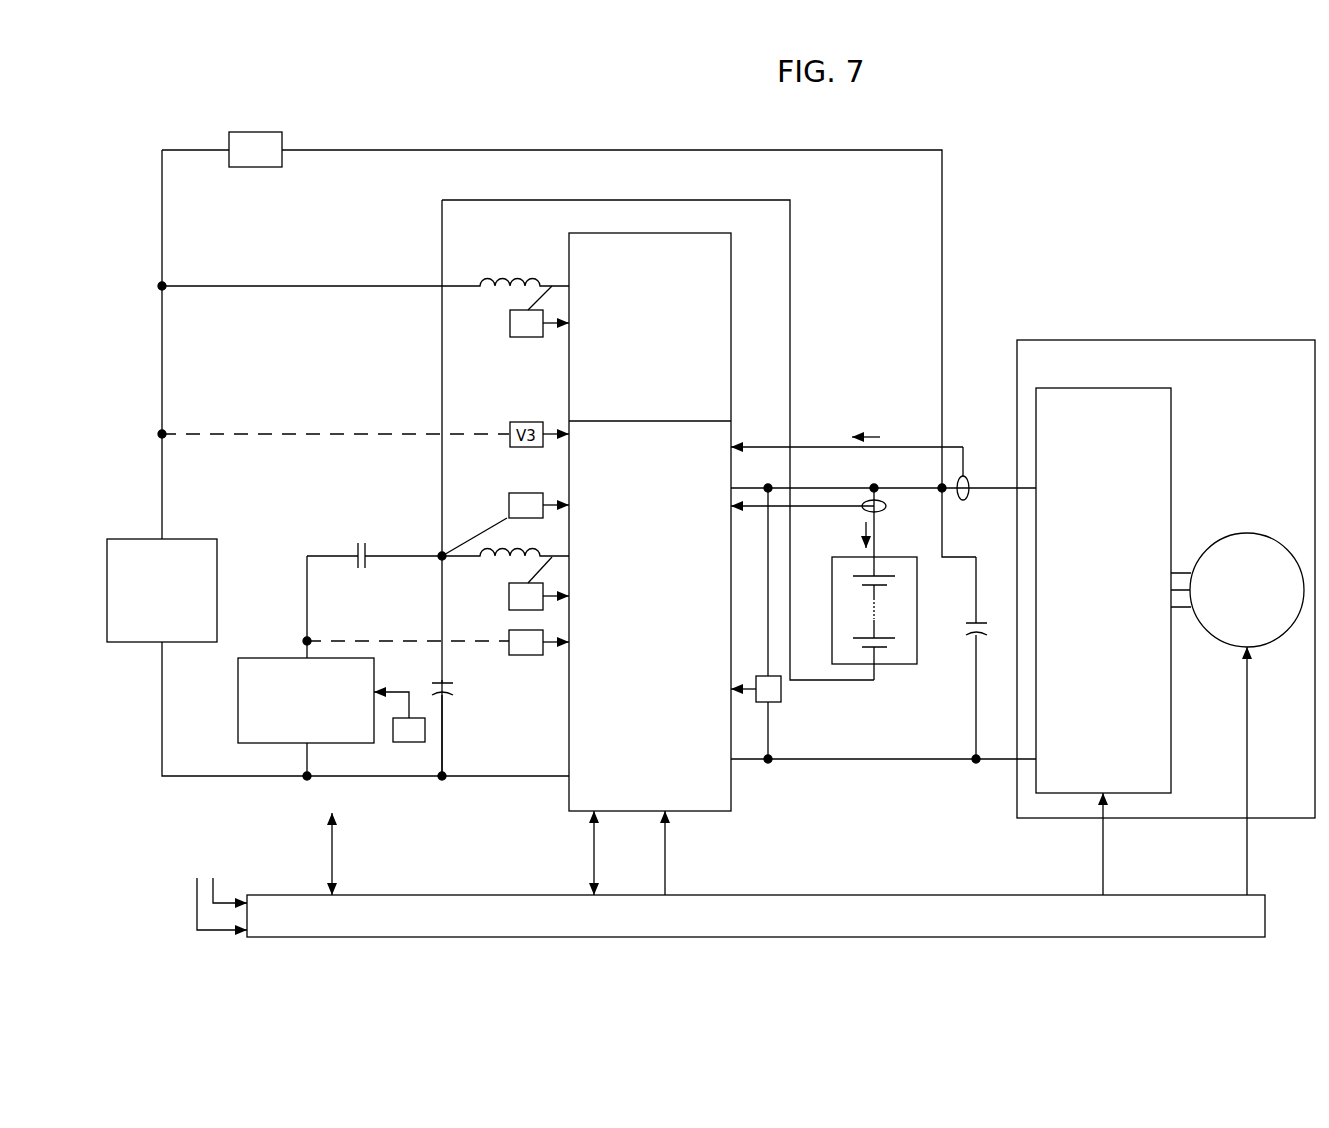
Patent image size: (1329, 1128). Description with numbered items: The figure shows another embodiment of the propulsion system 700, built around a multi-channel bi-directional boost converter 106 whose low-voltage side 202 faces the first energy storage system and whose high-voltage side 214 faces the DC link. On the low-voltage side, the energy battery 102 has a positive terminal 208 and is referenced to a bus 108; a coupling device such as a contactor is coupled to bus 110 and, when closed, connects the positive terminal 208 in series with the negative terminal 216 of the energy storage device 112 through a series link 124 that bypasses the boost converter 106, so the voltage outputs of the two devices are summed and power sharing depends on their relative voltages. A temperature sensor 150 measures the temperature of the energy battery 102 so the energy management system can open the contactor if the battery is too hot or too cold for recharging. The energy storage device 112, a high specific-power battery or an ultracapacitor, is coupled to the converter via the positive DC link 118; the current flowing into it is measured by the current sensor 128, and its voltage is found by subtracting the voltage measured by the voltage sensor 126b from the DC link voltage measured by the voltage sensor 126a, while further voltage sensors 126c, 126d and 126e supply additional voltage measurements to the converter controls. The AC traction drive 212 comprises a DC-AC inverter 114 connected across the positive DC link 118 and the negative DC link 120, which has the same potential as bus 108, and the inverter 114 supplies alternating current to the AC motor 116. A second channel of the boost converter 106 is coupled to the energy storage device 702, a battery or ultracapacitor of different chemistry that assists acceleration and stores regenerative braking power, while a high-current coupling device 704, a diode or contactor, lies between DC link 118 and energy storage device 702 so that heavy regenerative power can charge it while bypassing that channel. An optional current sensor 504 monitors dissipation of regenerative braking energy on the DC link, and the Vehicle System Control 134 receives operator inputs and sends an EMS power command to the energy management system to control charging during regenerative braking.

The electric propulsion system 700 is at (640, 142).
The energy storage device 702 is at (147, 539).
The high-current coupling device 704 is at (245, 132).
The low-voltage side 202 is at (405, 238).
The multi-channel bi-directional boost converter 106 is at (569, 386).
The voltage sensor Vb 126e is at (510, 318).
The voltage sensor 126b is at (514, 493).
The voltage sensor Va 126c is at (509, 594).
The voltage sensor V1 126d is at (509, 636).
The voltage sensor 126a is at (781, 693).
The bus 110 is at (307, 565).
The positive terminal 208 is at (307, 648).
The energy battery 102 is at (238, 677).
The bus 108 is at (307, 752).
The temperature sensor 150 is at (415, 742).
The high-voltage side 214 is at (868, 240).
The series link 124 is at (790, 364).
The current sensor 128 is at (886, 504).
The energy storage device 112 is at (917, 585).
The negative terminal 216 is at (876, 666).
The positive DC link 118 is at (993, 497).
The current sensor 504 is at (968, 480).
The negative DC link 120 is at (928, 760).
The AC traction drive 212 is at (1226, 340).
The DC-AC inverter 114 is at (1171, 437).
The AC motor 116 is at (1268, 537).
The Vehicle System Control 134 is at (1265, 912).